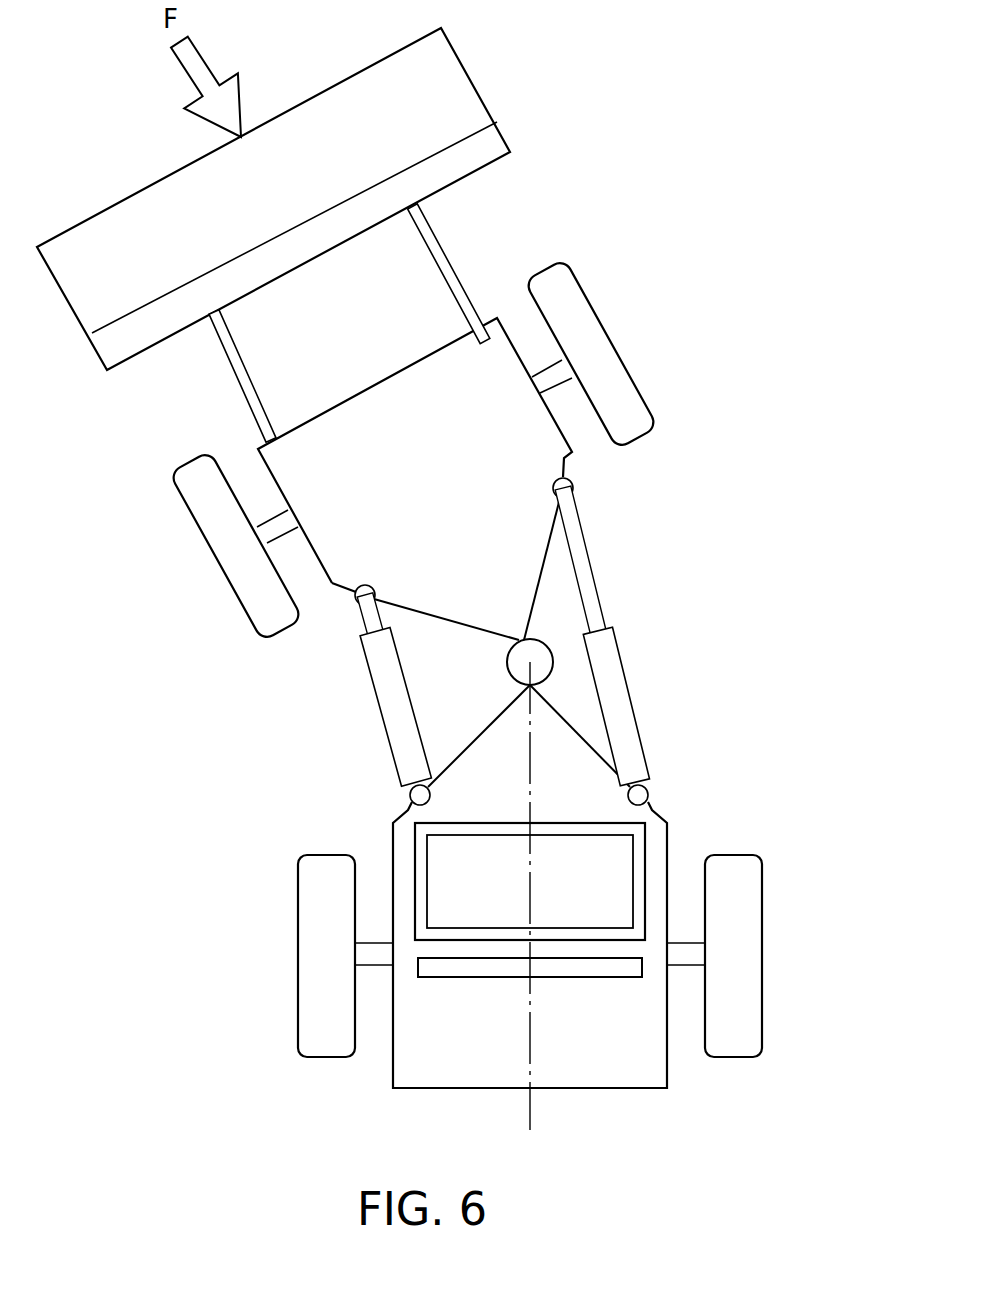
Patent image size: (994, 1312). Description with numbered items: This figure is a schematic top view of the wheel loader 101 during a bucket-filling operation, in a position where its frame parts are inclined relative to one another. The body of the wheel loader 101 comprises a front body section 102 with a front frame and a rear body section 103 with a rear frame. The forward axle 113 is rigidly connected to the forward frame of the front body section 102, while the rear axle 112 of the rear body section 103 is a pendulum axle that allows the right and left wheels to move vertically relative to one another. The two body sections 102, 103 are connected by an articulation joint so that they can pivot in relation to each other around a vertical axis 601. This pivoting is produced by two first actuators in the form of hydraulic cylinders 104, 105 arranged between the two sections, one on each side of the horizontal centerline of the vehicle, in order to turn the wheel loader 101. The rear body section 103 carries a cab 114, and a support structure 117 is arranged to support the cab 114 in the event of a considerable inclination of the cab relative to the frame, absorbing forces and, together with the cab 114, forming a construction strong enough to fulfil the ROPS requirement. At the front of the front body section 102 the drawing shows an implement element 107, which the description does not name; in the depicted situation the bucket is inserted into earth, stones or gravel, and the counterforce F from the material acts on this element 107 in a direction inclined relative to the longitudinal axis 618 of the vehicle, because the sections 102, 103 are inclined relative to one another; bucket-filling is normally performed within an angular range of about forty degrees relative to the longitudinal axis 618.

The wheel loader 101 is at (754, 445).
The front body section 102 is at (563, 458).
The rear body section 103 is at (660, 1062).
The hydraulic cylinder 104 is at (388, 698).
The hydraulic cylinder 105 is at (608, 668).
The platform 107 is at (462, 105).
The rear axle 112 is at (692, 955).
The forward axle 113 is at (552, 375).
The cab 114 is at (638, 862).
The support structure 117 is at (468, 967).
The vertical axis 601 is at (538, 665).
The longitudinal axis 618 is at (530, 1115).